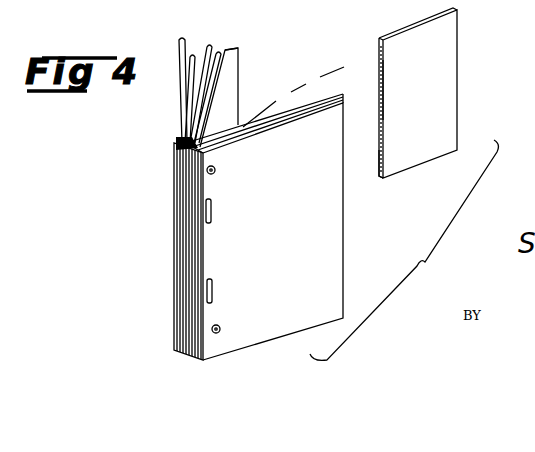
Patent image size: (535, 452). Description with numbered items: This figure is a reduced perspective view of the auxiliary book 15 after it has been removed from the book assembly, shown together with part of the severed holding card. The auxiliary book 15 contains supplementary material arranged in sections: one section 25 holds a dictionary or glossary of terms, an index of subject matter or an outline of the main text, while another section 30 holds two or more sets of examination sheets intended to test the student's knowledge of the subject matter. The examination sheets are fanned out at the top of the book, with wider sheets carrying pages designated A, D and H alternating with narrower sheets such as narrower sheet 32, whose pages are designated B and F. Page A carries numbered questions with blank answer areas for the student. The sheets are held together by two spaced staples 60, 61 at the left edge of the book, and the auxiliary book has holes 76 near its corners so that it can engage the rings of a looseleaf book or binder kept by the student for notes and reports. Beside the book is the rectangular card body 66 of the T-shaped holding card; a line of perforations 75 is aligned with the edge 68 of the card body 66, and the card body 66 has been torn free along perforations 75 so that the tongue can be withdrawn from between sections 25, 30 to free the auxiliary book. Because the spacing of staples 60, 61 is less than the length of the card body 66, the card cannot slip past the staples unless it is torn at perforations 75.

The auxiliary book 15 is at (162, 309).
The section 25 is at (314, 104).
The section 30 is at (180, 75).
The narrower sheet 32 is at (237, 85).
The staple 60 is at (206, 209).
The staple 61 is at (207, 289).
The card body 66 is at (447, 132).
The edge 68 is at (380, 157).
The line of perforations 75 is at (377, 59).
The holes 76 is at (219, 334).
The page H is at (180, 67).
The page F is at (190, 78).
The page D is at (211, 46).
The page B is at (221, 52).
The page A is at (238, 49).